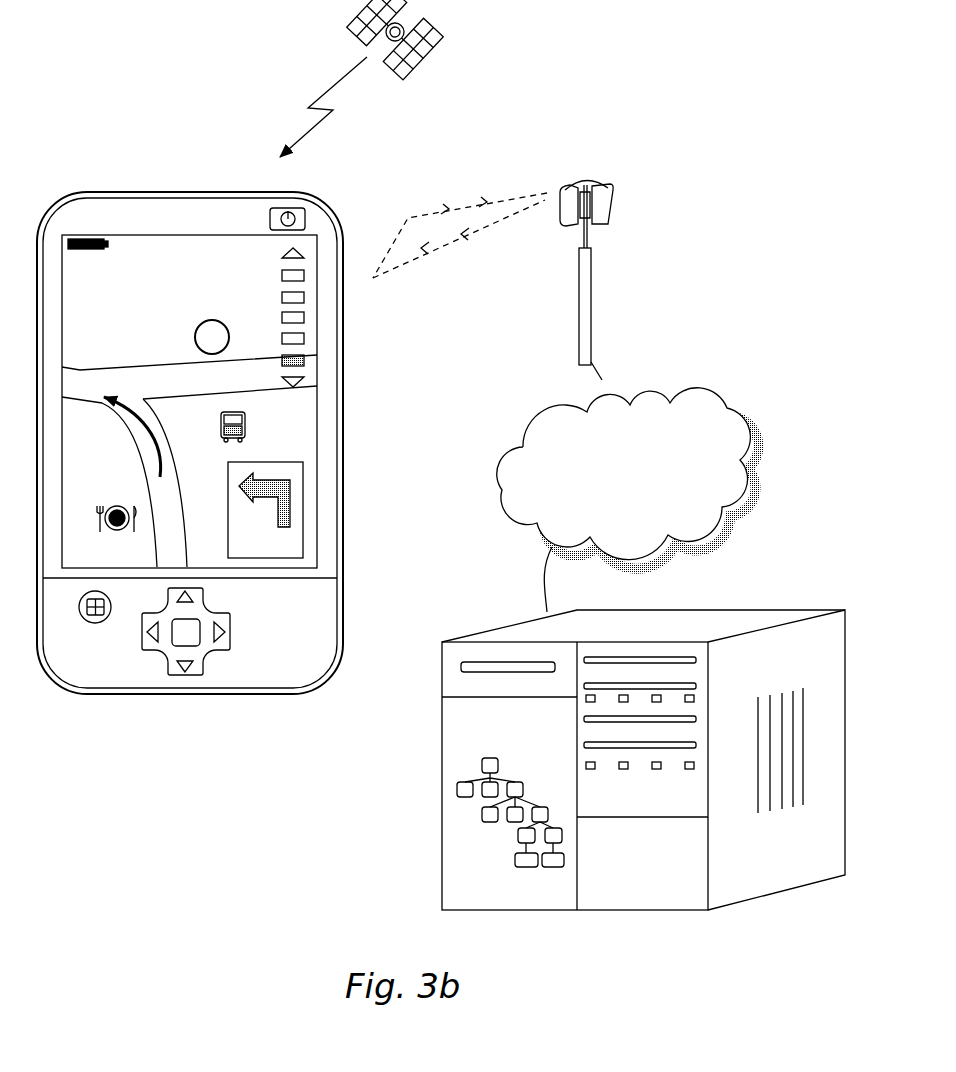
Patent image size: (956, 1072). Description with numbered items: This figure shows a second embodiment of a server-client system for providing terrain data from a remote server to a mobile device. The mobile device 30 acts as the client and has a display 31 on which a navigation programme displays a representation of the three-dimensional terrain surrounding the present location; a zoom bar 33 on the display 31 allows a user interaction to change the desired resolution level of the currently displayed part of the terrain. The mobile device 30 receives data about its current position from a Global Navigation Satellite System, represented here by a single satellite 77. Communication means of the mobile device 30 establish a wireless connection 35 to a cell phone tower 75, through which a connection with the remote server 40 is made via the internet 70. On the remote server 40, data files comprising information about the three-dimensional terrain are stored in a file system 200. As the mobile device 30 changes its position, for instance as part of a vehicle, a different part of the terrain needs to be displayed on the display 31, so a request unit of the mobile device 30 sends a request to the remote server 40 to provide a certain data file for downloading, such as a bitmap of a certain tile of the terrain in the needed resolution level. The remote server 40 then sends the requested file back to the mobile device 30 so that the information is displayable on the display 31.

The mobile device 30 is at (145, 716).
The display 31 is at (172, 258).
The zoom bar 33 is at (276, 264).
The wireless connection 35 is at (442, 225).
The remote server 40 is at (450, 614).
The internet 70 is at (745, 396).
The cell phone tower 75 is at (612, 244).
The satellite 77 is at (454, 56).
The file system 200 is at (462, 763).